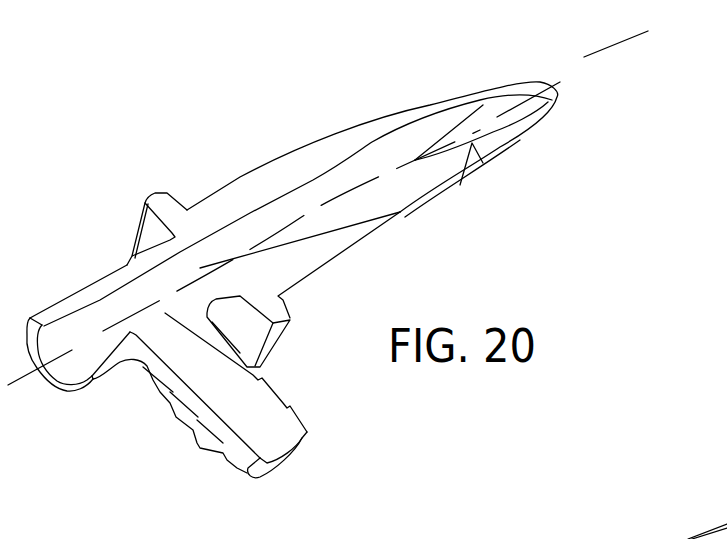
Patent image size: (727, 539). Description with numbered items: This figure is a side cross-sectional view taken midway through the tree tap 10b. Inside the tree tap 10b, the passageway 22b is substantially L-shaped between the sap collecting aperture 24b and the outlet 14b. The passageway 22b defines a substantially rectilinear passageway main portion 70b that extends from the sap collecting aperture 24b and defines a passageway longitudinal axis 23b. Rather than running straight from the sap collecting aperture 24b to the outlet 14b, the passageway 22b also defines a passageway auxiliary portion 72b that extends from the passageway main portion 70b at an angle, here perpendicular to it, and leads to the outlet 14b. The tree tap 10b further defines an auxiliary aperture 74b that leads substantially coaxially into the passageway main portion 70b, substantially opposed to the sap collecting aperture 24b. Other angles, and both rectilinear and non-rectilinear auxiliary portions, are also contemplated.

The tree tap 10b is at (181, 118).
The passageway main portion 70b is at (310, 180).
The passageway 22b is at (373, 143).
The passageway longitudinal axis 23b is at (493, 90).
The sap collecting aperture 24b is at (520, 108).
The auxiliary aperture 74b is at (66, 364).
The passageway auxiliary portion 72b is at (234, 398).
The outlet 14b is at (295, 446).